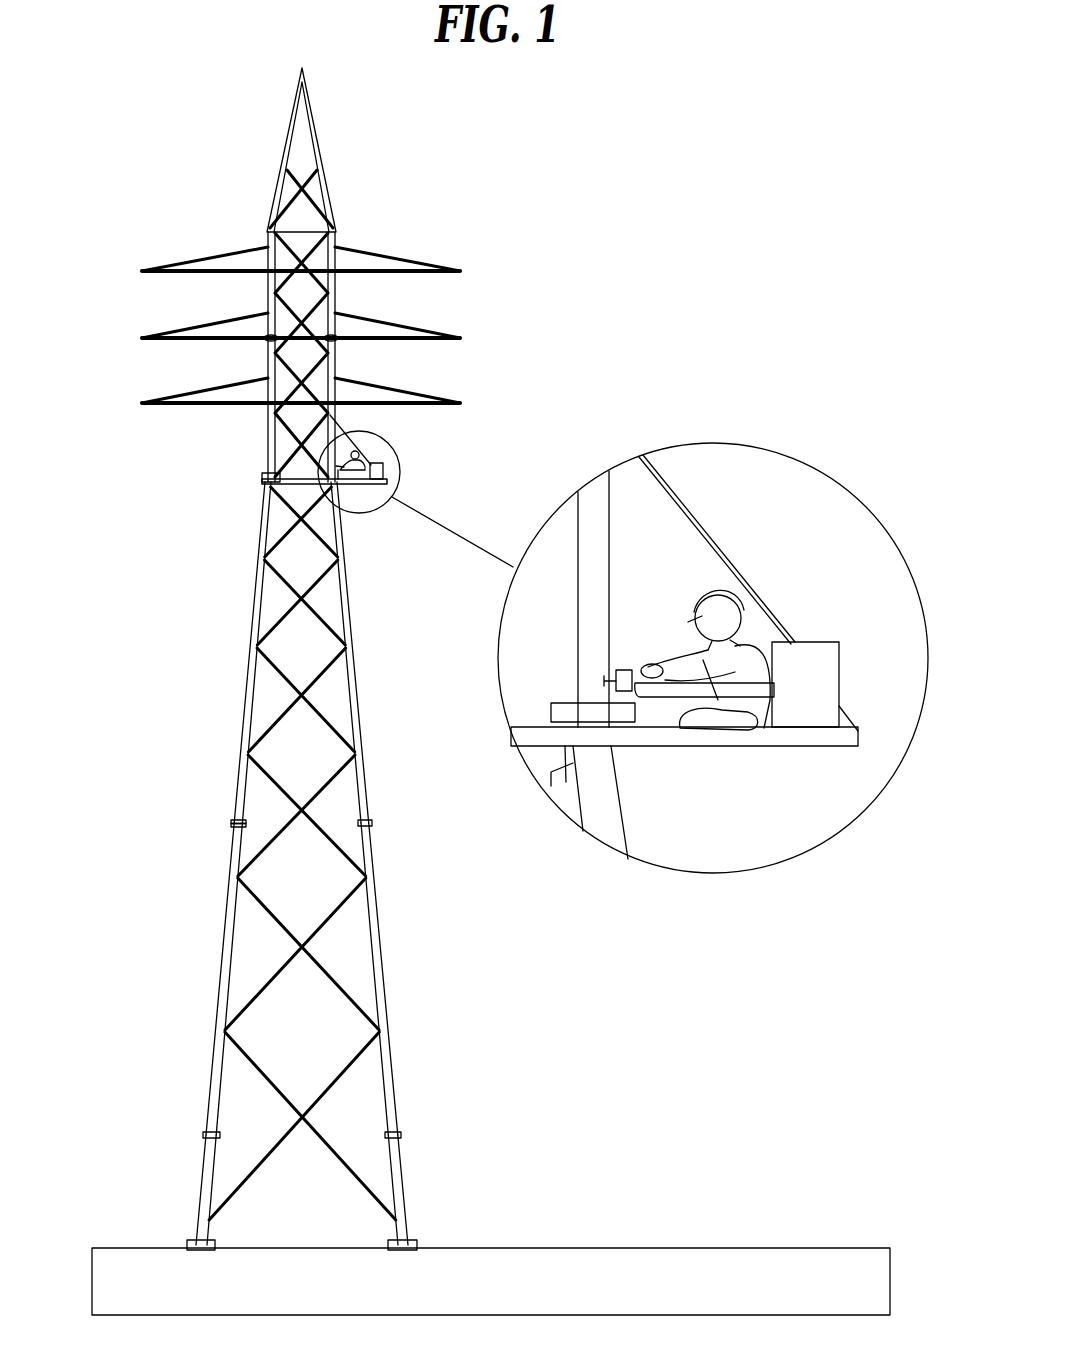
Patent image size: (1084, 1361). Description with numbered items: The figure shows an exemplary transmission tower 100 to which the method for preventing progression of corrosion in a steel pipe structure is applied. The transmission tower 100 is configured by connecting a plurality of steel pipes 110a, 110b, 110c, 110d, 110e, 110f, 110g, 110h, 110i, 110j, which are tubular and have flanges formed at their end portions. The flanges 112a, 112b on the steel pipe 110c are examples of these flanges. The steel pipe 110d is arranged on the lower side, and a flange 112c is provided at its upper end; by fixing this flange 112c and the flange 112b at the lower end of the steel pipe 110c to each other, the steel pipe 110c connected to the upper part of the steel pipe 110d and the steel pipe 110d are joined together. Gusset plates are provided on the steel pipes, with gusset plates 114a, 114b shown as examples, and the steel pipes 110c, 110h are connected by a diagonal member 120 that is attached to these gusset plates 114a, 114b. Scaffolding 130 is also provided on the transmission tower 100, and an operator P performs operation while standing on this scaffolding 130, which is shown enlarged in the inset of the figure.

The transmission tower 100 is at (464, 192).
The steel pipe 110a is at (262, 294).
The steel pipe 110b is at (262, 362).
The steel pipe 110c is at (240, 723).
The steel pipe 110d is at (222, 948).
The steel pipe 110e is at (200, 1165).
The steel pipe 110f is at (340, 293).
The steel pipe 110g is at (340, 363).
The steel pipe 110h is at (348, 645).
The steel pipe 110i is at (385, 958).
The steel pipe 110j is at (403, 1173).
The flange 112a is at (262, 478).
The flange 112b is at (232, 822).
The flange 112c is at (232, 825).
The gusset plate 114a is at (275, 562).
The gusset plate 114b is at (352, 703).
The diagonal member 120 is at (313, 632).
The scaffolding 130 is at (362, 492).
The operator P is at (735, 590).